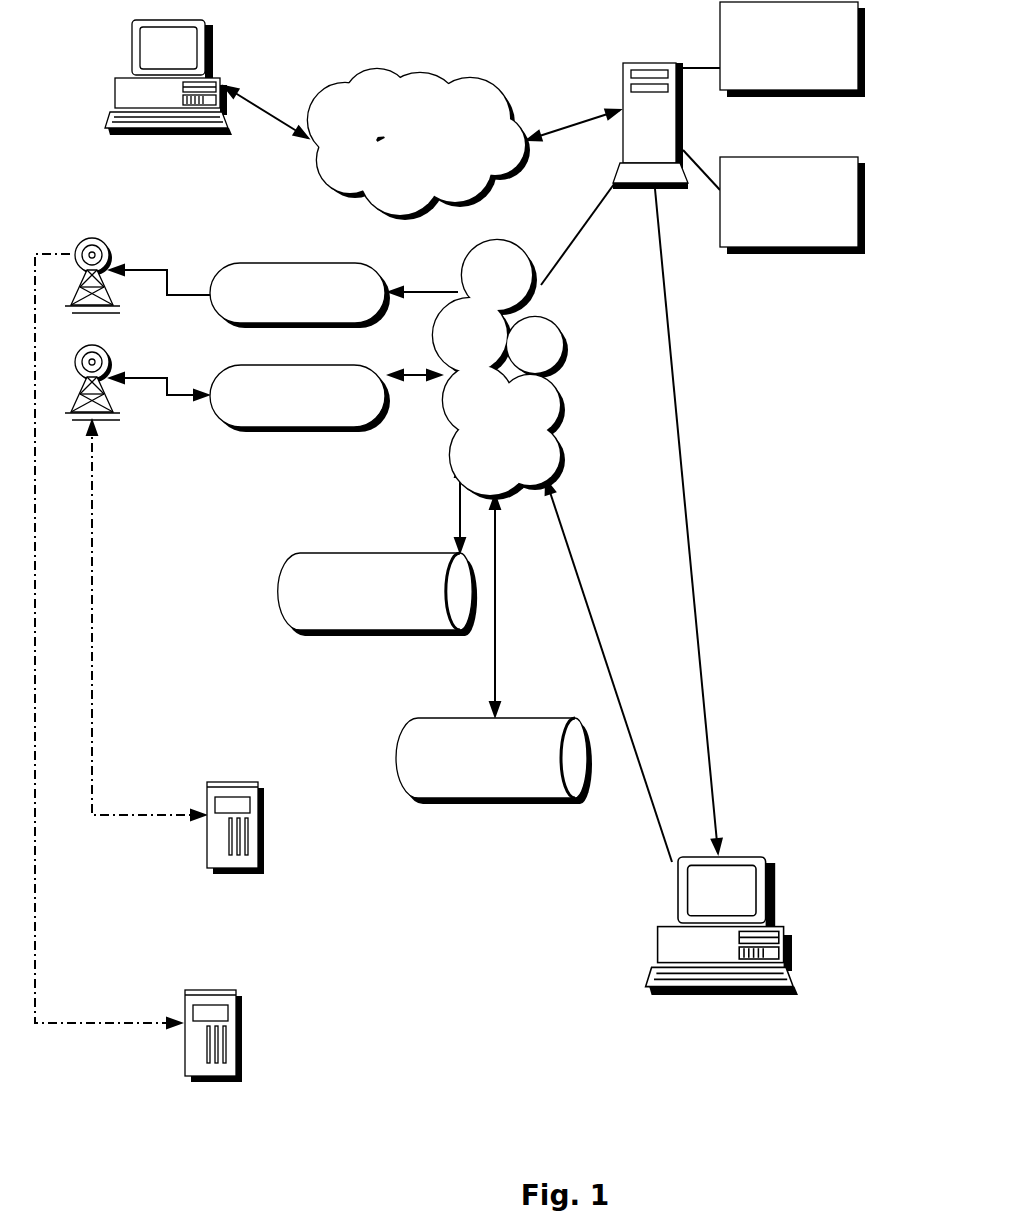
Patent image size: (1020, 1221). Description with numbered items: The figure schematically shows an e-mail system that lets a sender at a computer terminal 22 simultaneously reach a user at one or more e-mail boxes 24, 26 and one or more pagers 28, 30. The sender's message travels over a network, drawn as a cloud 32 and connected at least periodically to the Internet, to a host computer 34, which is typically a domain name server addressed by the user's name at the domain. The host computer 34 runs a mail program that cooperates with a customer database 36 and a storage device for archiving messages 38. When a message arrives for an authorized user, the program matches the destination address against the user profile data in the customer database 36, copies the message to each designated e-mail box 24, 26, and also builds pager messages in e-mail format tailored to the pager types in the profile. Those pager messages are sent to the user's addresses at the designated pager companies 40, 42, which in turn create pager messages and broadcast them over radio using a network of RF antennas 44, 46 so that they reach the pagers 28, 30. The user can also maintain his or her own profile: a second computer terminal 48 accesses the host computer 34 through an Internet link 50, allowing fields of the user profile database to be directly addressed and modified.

The computer terminal 22 is at (205, 77).
The e-mail box 24 is at (300, 556).
The e-mail box 26 is at (405, 795).
The pager 28 is at (222, 782).
The pager 30 is at (200, 990).
The network 32 is at (385, 72).
The host computer 34 is at (633, 63).
The customer database 36 is at (717, 93).
The storage device for archiving messages 38 is at (718, 250).
The pager company 40 is at (262, 263).
The pager company 42 is at (235, 427).
The RF antenna 44 is at (110, 242).
The RF antenna 46 is at (112, 352).
The computer terminal 48 is at (755, 855).
The Internet link 50 is at (553, 385).